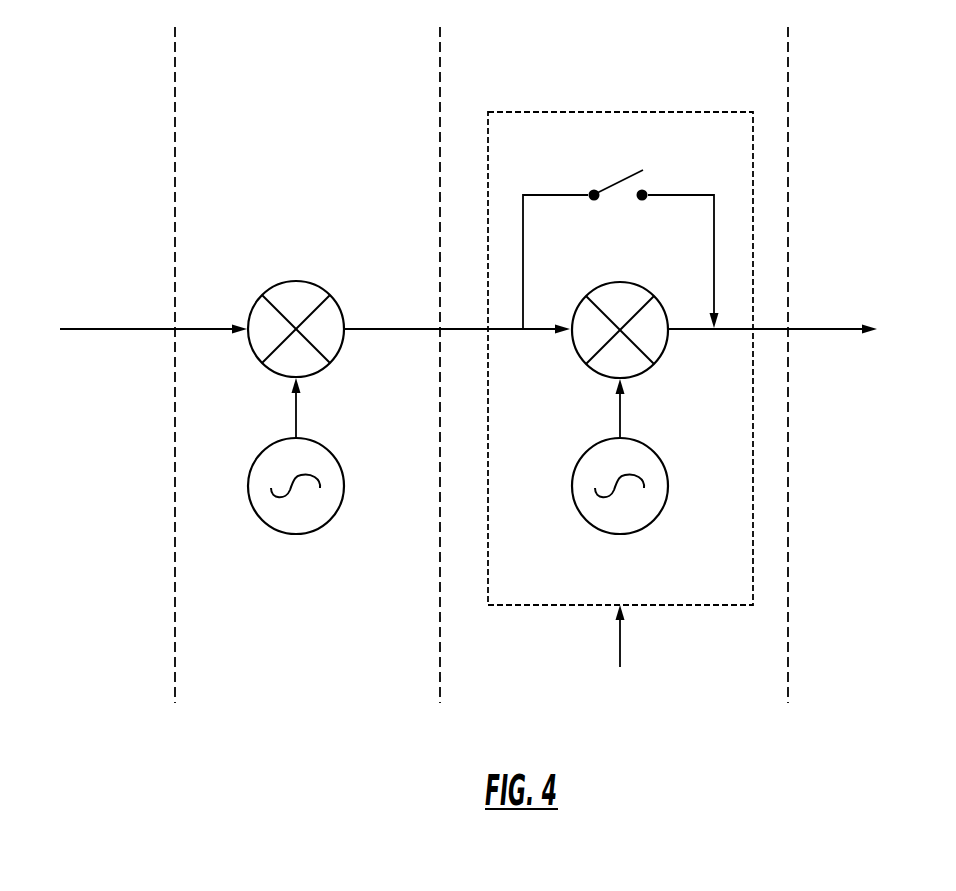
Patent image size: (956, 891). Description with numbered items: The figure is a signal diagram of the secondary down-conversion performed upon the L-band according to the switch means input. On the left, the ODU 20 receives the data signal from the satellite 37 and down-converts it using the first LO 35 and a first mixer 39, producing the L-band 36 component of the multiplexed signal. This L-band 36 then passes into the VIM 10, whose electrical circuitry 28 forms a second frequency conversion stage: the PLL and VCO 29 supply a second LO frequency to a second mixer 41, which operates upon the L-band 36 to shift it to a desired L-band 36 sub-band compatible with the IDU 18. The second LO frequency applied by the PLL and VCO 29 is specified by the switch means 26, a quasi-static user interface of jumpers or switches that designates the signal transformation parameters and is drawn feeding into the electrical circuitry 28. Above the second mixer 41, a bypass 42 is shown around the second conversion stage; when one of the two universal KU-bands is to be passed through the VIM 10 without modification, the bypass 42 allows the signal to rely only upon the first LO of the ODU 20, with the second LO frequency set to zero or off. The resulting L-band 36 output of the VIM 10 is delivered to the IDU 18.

The VIM 10 is at (598, 97).
The ODU 20 is at (280, 97).
The electrical circuitry 28 is at (533, 593).
The switch means 26 is at (620, 653).
The satellite 37 is at (140, 329).
The first mixer 39 is at (300, 279).
The first LO 35 is at (318, 535).
The L-band 36 is at (417, 325).
The second mixer 41 is at (638, 280).
The bypass 42 is at (620, 183).
The PLL and VCO 29 is at (642, 535).
The IDU 18 is at (785, 329).